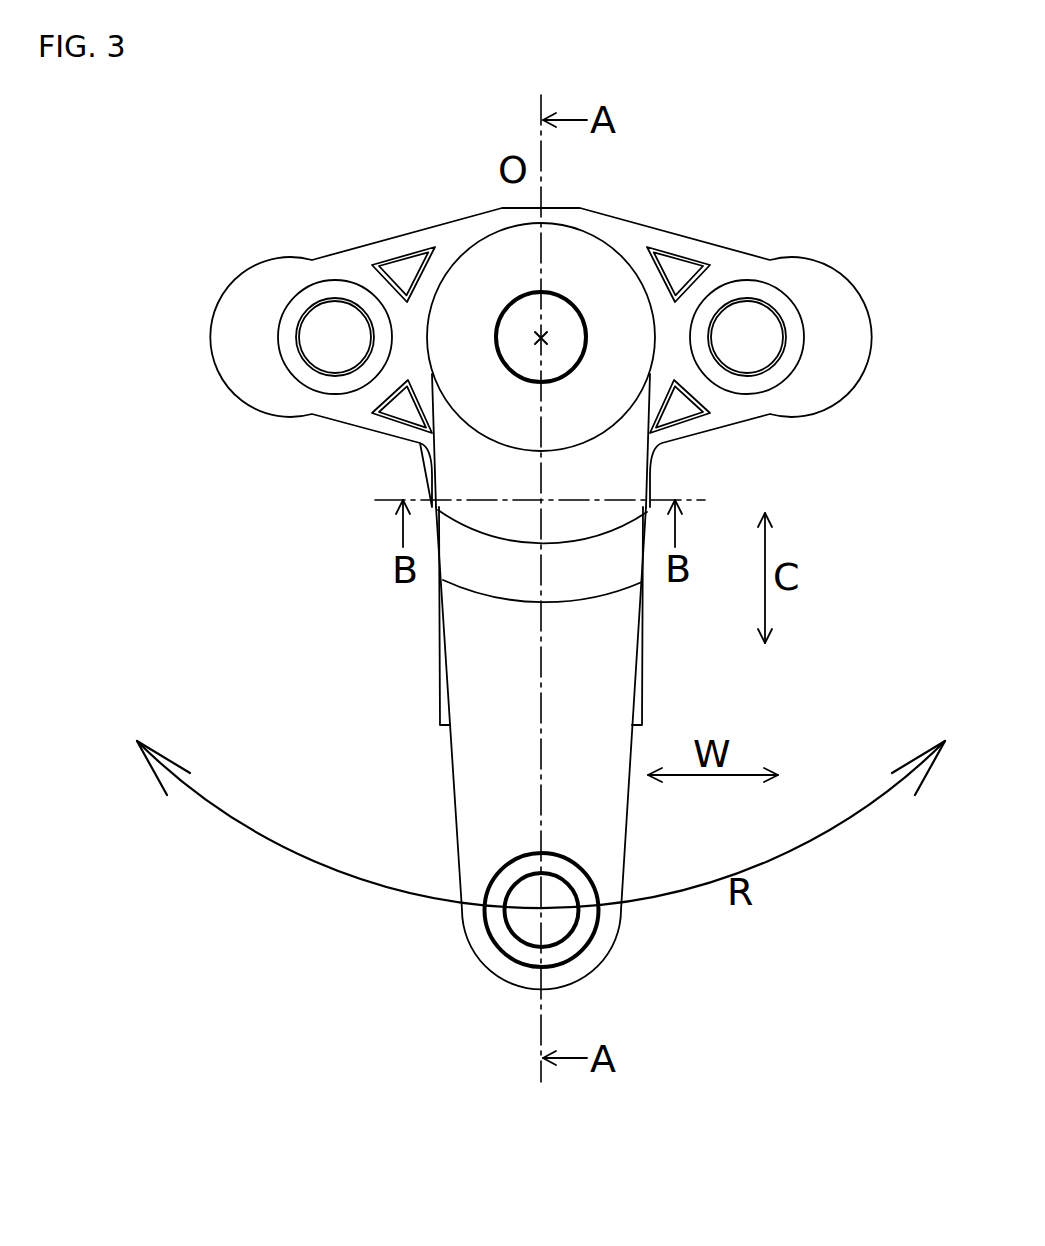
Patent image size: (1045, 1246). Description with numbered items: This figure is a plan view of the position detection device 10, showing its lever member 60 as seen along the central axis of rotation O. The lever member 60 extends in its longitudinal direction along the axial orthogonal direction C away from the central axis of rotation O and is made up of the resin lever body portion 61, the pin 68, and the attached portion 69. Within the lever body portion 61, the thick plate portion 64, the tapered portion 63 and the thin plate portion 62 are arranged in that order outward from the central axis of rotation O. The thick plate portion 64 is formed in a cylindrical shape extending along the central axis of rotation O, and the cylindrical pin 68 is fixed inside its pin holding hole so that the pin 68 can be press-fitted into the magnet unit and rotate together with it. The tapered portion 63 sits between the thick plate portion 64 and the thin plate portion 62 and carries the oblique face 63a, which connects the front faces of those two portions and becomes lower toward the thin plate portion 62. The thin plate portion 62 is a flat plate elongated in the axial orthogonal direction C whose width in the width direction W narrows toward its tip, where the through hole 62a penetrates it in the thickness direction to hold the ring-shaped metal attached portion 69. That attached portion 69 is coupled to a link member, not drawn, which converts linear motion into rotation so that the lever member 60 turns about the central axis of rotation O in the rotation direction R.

The position detection device 10 is at (788, 197).
The lever member 60 is at (470, 249).
The lever body portion 61 is at (105, 415).
The thin plate portion 62 is at (483, 668).
The through hole 62a is at (497, 870).
The tapered portion 63 is at (455, 455).
The oblique face 63a is at (600, 472).
The thick plate portion 64 is at (480, 390).
The pin 68 is at (560, 298).
The attached portion 69 is at (498, 925).